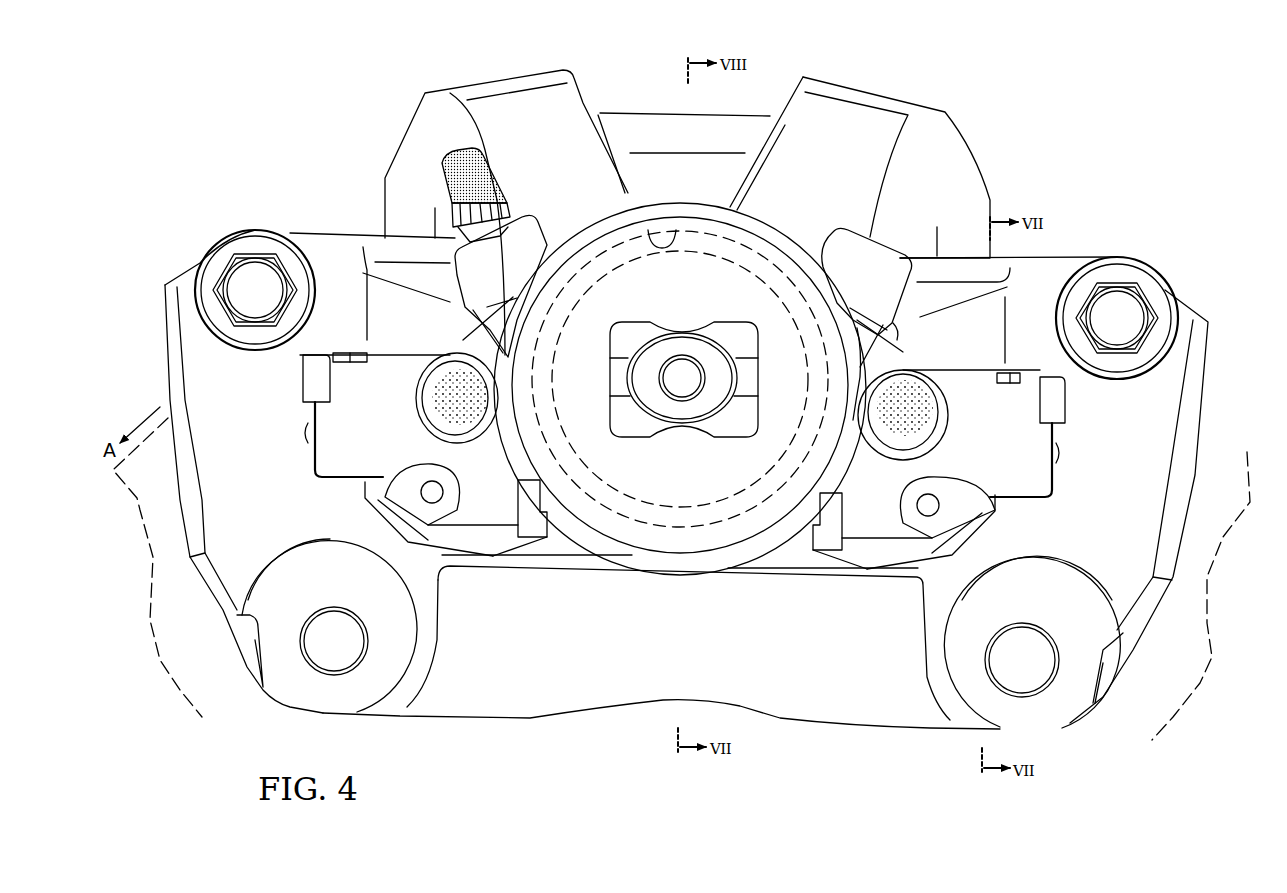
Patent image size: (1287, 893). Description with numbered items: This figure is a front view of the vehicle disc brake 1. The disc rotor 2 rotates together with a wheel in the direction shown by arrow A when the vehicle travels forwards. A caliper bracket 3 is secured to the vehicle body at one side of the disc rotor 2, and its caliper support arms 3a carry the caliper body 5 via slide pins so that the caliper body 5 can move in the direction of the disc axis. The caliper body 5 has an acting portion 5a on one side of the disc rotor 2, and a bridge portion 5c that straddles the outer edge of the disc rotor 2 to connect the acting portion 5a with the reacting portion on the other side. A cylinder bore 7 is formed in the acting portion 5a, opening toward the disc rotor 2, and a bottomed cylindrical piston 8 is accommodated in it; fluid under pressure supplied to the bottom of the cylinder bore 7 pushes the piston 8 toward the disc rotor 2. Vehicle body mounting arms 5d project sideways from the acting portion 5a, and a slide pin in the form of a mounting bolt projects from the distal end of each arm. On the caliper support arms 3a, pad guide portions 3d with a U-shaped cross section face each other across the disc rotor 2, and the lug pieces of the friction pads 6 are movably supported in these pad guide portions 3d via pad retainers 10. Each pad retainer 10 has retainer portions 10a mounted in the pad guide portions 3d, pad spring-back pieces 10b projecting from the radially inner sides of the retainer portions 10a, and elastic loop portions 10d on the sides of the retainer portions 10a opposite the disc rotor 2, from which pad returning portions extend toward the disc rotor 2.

The disc brake device 1 is at (695, 43).
The disc rotor 2 is at (1247, 452).
The caliper bracket 3 is at (1217, 332).
The caliper support arm 3a is at (177, 363).
The pad guide portion 3d is at (328, 415).
The caliper body 5 is at (686, 399).
The acting portion 5a is at (715, 562).
The bridge portion 5c is at (656, 118).
The vehicle body mounting arm 5d is at (333, 238).
The friction pad 6 is at (348, 470).
The cylinder bore 7 is at (668, 228).
The piston 8 is at (762, 258).
The pad retainer 10 is at (300, 395).
The retainer portion 10a is at (314, 448).
The pad spring-back piece 10b is at (330, 482).
The elastic loop portion 10d is at (308, 371).